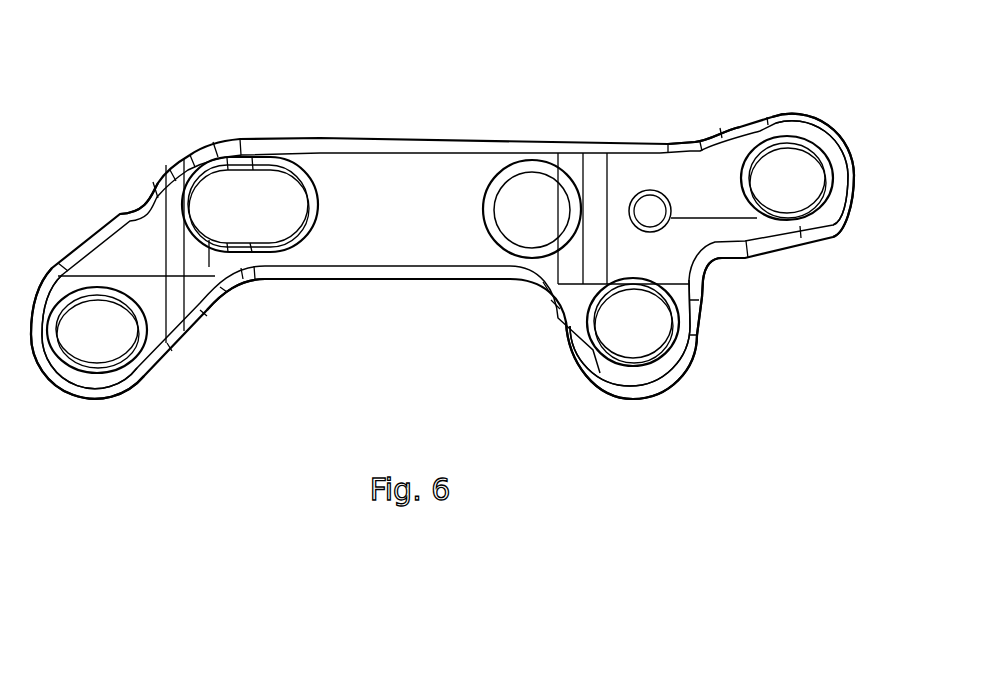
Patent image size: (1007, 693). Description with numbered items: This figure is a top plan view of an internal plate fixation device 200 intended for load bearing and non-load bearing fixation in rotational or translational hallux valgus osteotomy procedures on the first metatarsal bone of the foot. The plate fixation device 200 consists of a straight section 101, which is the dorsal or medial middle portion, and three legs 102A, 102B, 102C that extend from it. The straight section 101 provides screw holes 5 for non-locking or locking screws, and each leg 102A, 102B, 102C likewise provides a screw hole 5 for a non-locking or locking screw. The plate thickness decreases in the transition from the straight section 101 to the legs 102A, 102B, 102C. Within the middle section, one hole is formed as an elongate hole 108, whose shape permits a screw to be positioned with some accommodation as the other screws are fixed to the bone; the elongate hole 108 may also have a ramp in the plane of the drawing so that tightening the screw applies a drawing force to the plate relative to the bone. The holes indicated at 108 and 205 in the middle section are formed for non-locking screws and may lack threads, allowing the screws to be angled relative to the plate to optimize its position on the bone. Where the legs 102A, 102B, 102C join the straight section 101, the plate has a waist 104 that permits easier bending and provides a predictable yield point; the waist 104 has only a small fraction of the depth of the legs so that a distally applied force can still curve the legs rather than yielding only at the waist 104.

The internal plate fixation device 200 is at (279, 76).
The straight section 101 is at (441, 122).
The leg 102A is at (734, 86).
The leg 102B is at (666, 423).
The leg 102C is at (103, 435).
The waist 104 is at (670, 119).
The elongate hole 108 is at (253, 172).
The screw hole 5 is at (758, 156).
The hole 205 is at (548, 182).